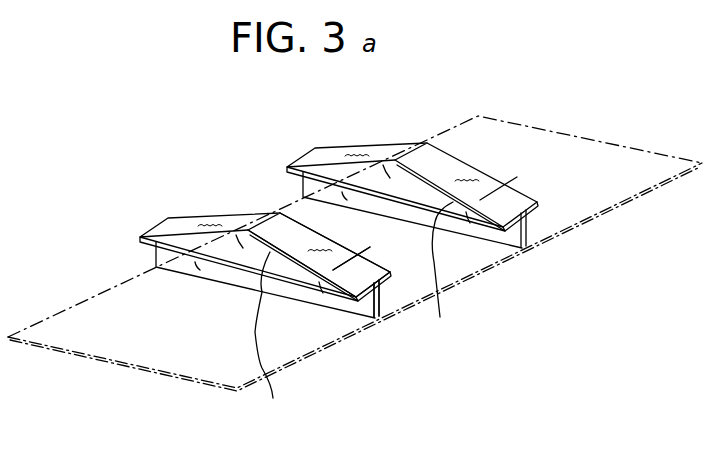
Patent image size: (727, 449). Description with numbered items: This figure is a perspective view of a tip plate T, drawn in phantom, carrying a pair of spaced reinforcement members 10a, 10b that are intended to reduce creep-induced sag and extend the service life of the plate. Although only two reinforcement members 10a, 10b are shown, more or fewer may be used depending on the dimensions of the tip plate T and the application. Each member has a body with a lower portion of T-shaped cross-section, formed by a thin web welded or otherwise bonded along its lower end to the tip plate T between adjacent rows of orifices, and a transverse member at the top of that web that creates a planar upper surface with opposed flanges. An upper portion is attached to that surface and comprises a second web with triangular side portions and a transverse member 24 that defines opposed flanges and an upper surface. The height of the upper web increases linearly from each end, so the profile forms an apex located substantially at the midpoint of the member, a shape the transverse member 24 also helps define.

The reinforcement member 10a is at (226, 278).
The reinforcement member 10b is at (391, 195).
The transverse member 24 is at (292, 230).
The tip plate T is at (545, 147).